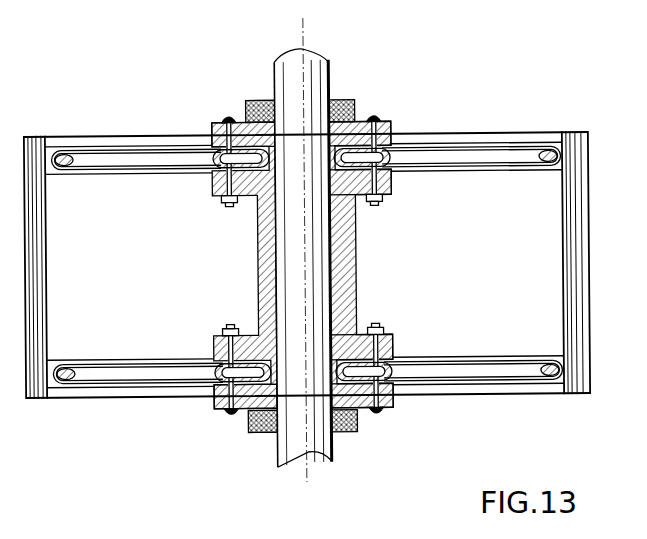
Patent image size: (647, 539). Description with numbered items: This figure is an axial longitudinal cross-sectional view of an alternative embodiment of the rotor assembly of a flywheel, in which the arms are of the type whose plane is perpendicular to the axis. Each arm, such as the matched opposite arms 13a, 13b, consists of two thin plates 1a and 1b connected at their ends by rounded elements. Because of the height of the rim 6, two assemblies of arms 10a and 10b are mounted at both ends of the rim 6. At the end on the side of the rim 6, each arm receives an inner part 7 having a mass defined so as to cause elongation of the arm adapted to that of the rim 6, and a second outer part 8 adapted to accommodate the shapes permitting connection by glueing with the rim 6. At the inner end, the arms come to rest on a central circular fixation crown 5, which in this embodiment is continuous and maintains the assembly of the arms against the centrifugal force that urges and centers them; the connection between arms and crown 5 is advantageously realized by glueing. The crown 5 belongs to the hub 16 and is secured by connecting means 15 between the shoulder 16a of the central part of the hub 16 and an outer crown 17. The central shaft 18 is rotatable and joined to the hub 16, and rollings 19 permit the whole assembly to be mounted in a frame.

The thin plate 1a is at (156, 147).
The thin plate 1b is at (172, 174).
The circular crown 5 is at (252, 135).
The rim 6 is at (578, 290).
The inner part 7 is at (67, 152).
The outer part 8 is at (54, 150).
The assembly of arms 10a is at (421, 179).
The assembly of arms 10b is at (448, 351).
The arm 13a is at (128, 168).
The arm 13b is at (484, 157).
The connecting means 15 is at (228, 196).
The hub 16 is at (350, 285).
The shoulder 16a is at (387, 202).
The outer crown 17 is at (394, 125).
The central shaft 18 is at (316, 77).
The rollings 19 is at (262, 100).